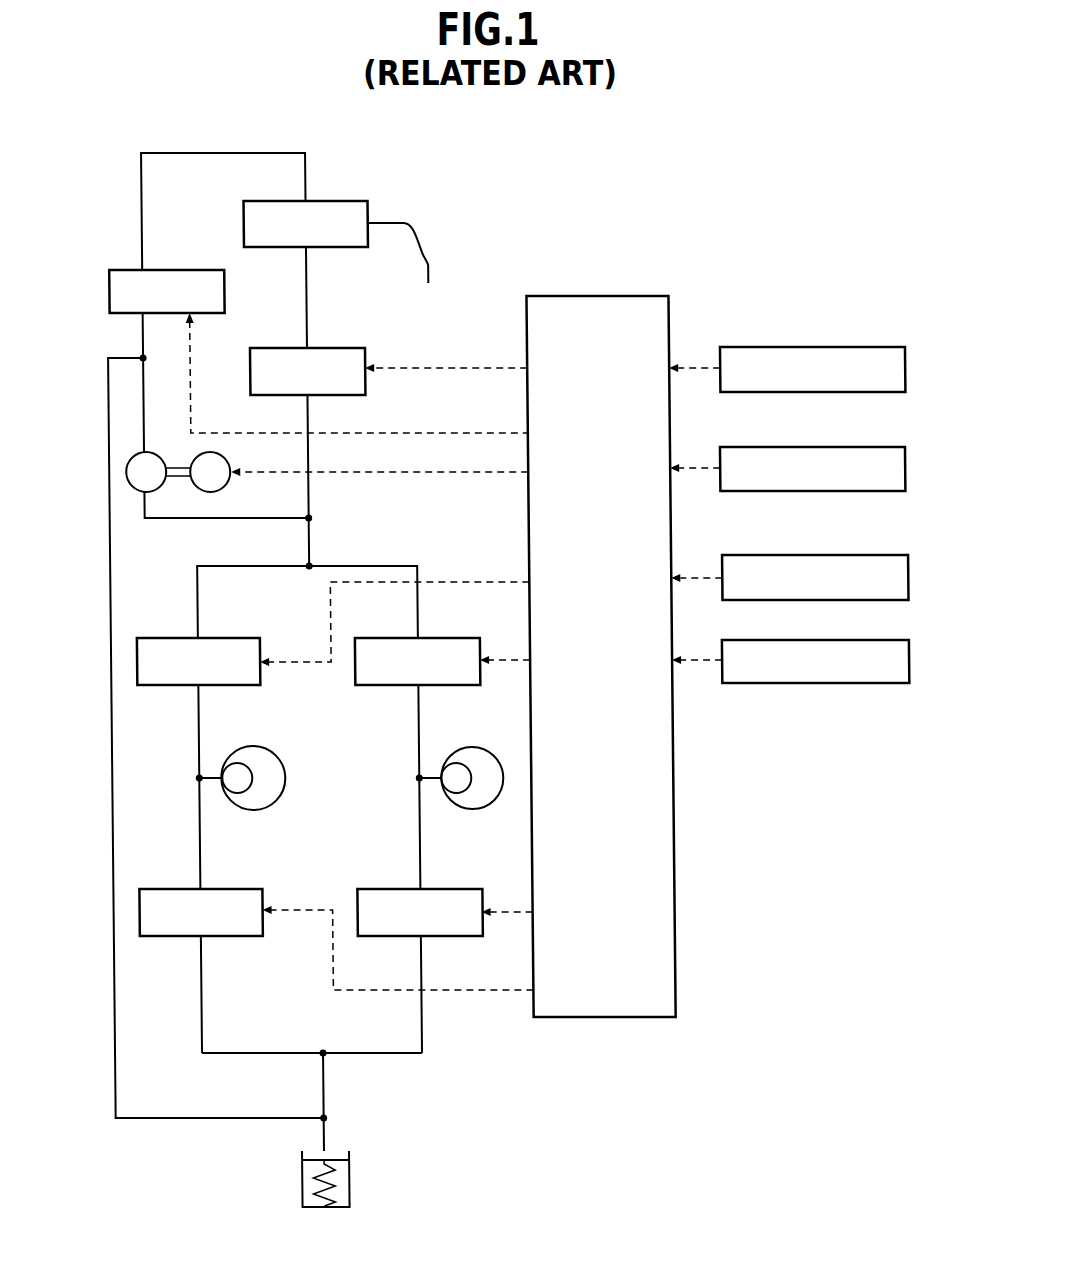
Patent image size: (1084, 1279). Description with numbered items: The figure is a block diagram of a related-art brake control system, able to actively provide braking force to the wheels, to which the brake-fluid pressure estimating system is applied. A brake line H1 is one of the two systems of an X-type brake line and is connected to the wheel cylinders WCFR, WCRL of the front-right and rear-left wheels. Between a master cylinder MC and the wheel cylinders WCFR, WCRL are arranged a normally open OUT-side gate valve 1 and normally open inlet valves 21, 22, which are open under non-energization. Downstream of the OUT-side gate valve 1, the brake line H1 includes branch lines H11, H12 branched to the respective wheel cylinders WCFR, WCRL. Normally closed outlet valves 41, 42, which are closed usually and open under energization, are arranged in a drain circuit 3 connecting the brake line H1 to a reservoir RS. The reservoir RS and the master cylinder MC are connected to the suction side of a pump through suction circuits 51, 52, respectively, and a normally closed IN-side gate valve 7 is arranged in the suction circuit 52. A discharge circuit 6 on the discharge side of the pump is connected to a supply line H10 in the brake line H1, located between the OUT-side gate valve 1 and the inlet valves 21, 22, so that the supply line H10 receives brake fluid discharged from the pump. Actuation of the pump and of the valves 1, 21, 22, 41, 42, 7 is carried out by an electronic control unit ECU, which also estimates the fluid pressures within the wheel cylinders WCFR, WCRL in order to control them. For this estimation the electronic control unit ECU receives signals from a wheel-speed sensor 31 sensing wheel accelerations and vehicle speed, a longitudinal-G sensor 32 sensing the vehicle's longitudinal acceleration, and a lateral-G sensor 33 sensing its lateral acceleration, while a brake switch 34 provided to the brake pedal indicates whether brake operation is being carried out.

The OUT-side gate valve 1 is at (338, 347).
The drain circuit 3 is at (317, 1087).
The discharge circuit 6 is at (237, 518).
The IN-side gate valve 7 is at (187, 268).
The inlet valve 21 is at (254, 626).
The inlet valve 22 is at (455, 638).
The wheel-speed sensor 31 is at (832, 347).
The longitudinal-G sensor 32 is at (830, 447).
The lateral-G sensor 33 is at (830, 555).
The brake switch 34 is at (840, 684).
The outlet valve 41 is at (237, 888).
The outlet valve 42 is at (458, 888).
The suction circuit 51 is at (215, 1120).
The suction circuit 52 is at (142, 210).
The master cylinder MC is at (345, 200).
The brake line H1 is at (308, 295).
The supply line H10 is at (324, 527).
The branch line H11 is at (252, 565).
The branch line H12 is at (384, 565).
The wheel cylinder WCFR is at (277, 748).
The wheel cylinder WCRL is at (492, 748).
The reservoir RS is at (341, 1170).
The electronic control unit ECU is at (612, 284).